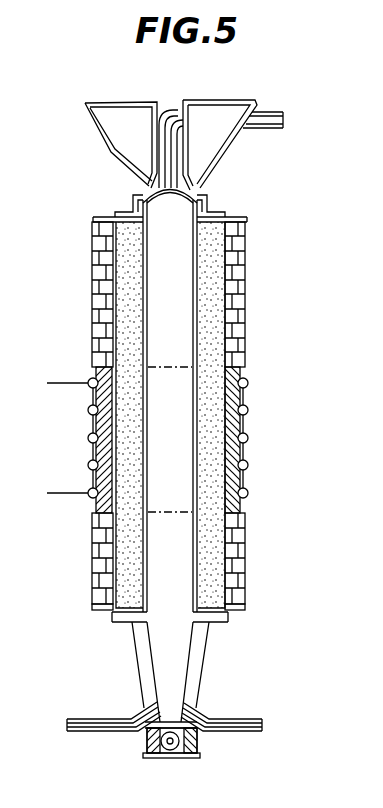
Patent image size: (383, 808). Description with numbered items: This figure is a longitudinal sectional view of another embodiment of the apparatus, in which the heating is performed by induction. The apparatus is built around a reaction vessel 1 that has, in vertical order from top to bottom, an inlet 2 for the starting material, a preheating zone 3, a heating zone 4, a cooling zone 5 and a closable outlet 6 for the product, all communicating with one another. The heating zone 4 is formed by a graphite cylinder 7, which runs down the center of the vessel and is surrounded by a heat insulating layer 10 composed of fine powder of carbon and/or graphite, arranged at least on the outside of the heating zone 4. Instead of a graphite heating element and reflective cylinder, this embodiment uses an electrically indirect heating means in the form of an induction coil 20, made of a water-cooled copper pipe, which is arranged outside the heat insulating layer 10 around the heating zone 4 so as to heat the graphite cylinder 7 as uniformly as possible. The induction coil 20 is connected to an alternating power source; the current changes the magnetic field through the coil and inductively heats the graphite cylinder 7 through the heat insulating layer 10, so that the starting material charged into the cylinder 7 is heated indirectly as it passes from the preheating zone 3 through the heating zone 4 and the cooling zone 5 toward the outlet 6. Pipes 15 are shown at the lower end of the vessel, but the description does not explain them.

The reaction vessel 1 is at (249, 242).
The inlet 2 is at (147, 184).
The preheating zone 3 is at (172, 272).
The heating zone 4 is at (170, 407).
The cooling zone 5 is at (172, 589).
The closable outlet 6 is at (196, 743).
The graphite cylinder 7 is at (197, 332).
The heat insulating layer 10 is at (213, 522).
The outlet pipe 15 is at (246, 719).
The induction coil 20 is at (88, 412).